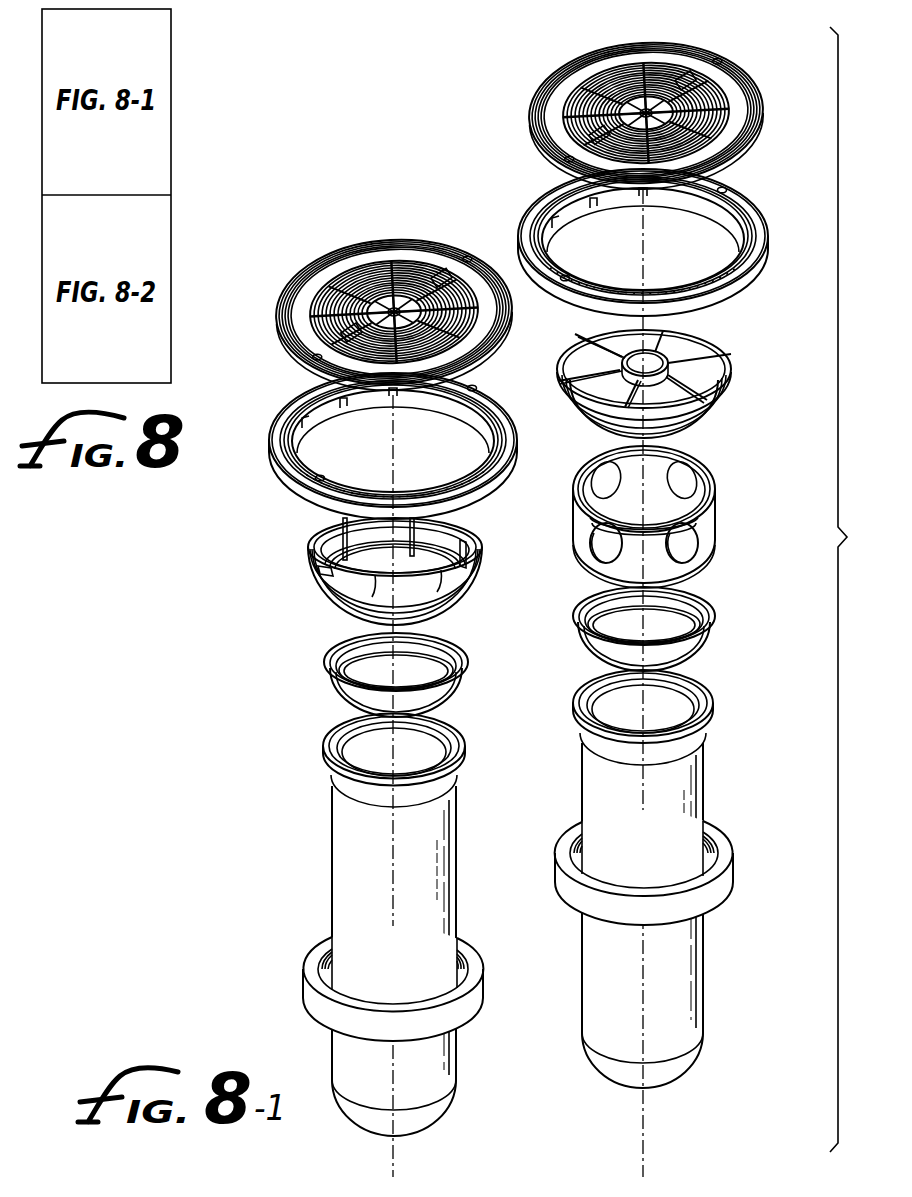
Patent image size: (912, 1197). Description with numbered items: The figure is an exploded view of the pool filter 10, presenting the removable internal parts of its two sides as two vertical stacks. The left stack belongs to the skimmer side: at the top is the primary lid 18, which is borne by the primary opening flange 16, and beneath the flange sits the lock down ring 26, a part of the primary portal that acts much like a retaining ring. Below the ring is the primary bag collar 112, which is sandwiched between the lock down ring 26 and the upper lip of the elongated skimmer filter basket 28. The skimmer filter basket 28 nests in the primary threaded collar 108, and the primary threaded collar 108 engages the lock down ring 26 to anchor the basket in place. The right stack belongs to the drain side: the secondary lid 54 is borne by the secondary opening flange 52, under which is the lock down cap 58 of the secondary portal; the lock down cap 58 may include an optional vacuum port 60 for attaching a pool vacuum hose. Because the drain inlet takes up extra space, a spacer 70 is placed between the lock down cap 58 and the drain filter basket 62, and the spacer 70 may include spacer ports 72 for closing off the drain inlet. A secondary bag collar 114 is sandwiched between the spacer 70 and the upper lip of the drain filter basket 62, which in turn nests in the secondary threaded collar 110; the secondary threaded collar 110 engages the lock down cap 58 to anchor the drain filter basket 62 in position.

The pool filter 10 is at (313, 147).
The primary lid 18 is at (323, 280).
The primary opening flange 16 is at (290, 412).
The lock down ring 26 is at (318, 552).
The primary bag collar 112 is at (331, 660).
The skimmer filter basket 28 is at (355, 865).
The primary threaded collar 108 is at (325, 1005).
The secondary lid 54 is at (727, 92).
The secondary opening flange 52 is at (733, 200).
The vacuum port 60 is at (657, 364).
The lock down cap 58 is at (720, 383).
The spacer 70 is at (655, 465).
The spacer ports 72 is at (688, 540).
The secondary bag collar 114 is at (706, 642).
The secondary threaded collar 110 is at (718, 887).
The drain filter basket 62 is at (683, 972).